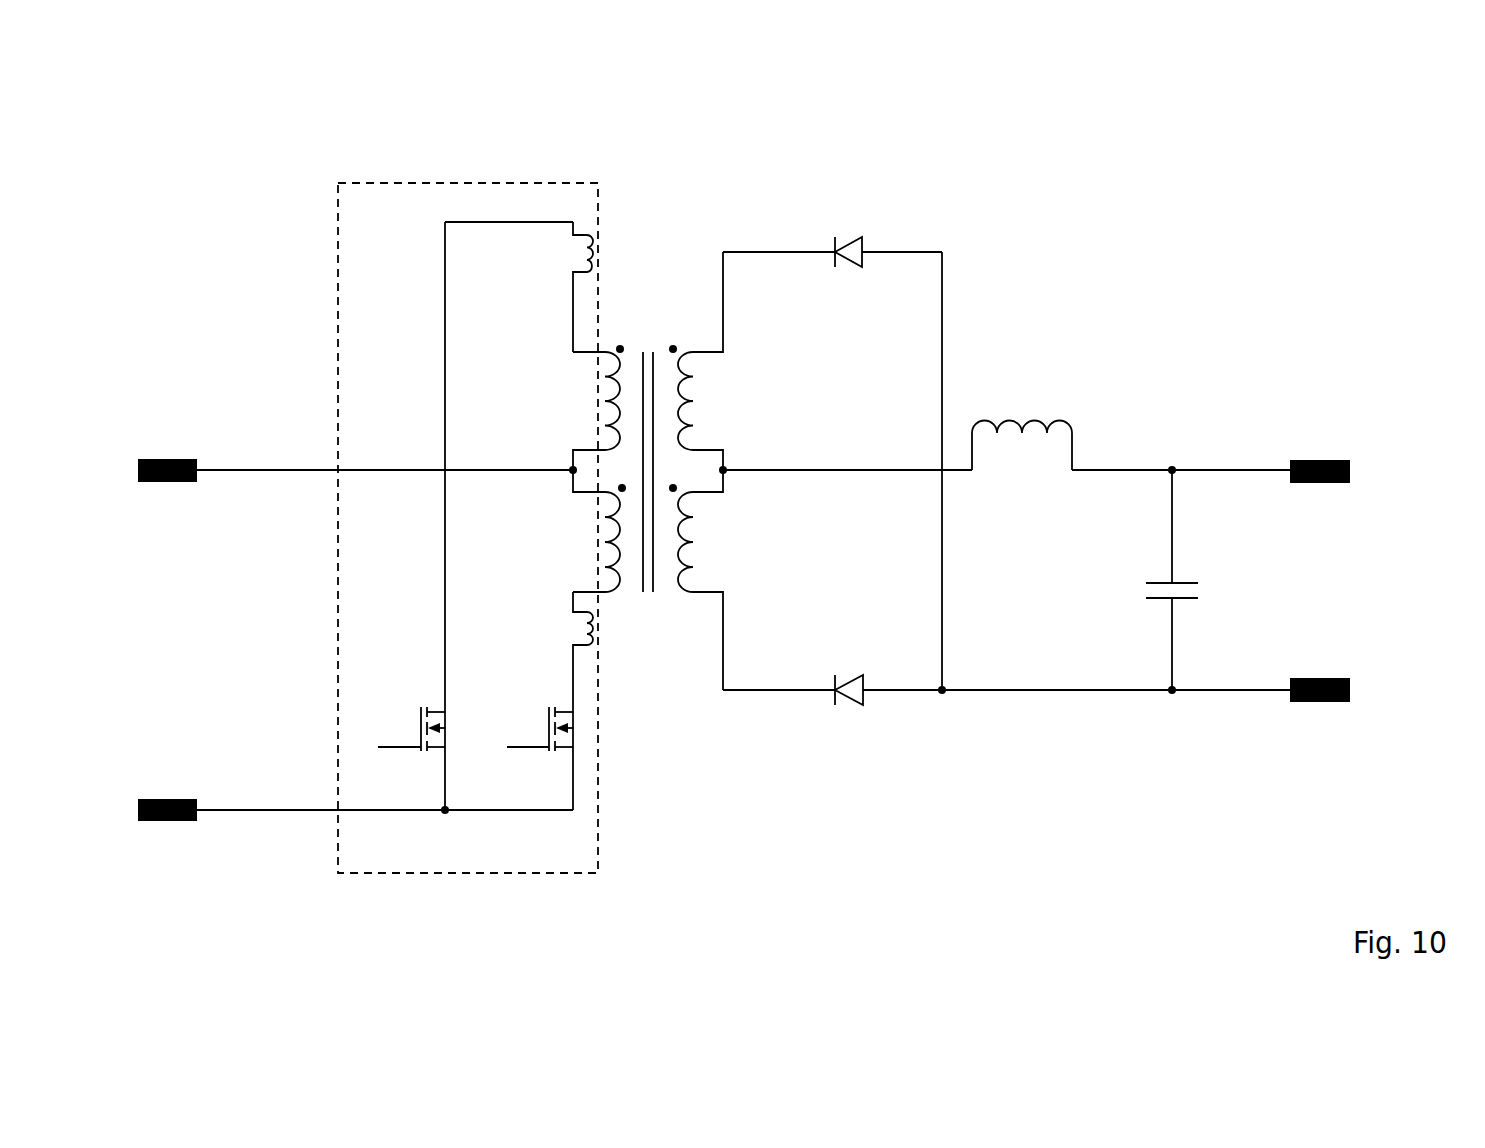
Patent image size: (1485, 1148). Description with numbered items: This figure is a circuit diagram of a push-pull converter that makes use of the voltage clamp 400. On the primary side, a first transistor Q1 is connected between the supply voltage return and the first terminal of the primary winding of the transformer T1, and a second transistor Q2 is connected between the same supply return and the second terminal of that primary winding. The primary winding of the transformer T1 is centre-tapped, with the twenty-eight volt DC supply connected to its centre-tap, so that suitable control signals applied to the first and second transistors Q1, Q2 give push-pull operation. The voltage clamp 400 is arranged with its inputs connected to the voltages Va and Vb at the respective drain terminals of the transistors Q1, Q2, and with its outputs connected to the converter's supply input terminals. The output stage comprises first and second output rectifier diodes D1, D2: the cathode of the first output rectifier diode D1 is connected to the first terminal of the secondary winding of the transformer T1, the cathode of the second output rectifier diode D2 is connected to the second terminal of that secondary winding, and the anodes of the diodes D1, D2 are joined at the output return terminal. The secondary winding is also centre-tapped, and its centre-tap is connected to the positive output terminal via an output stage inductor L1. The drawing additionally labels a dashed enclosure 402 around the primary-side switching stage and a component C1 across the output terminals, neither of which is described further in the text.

The voltage clamp 400 is at (1226, 213).
The switching circuit (push-pull primary stage) 402 is at (467, 183).
The first transistor Q1 is at (432, 698).
The second transistor Q2 is at (560, 698).
The transformer T1 is at (648, 471).
The first output rectifier diode D1 is at (847, 270).
The second output rectifier diode D2 is at (846, 709).
The output stage inductor L1 is at (1022, 431).
The output capacitor C1 is at (1194, 580).